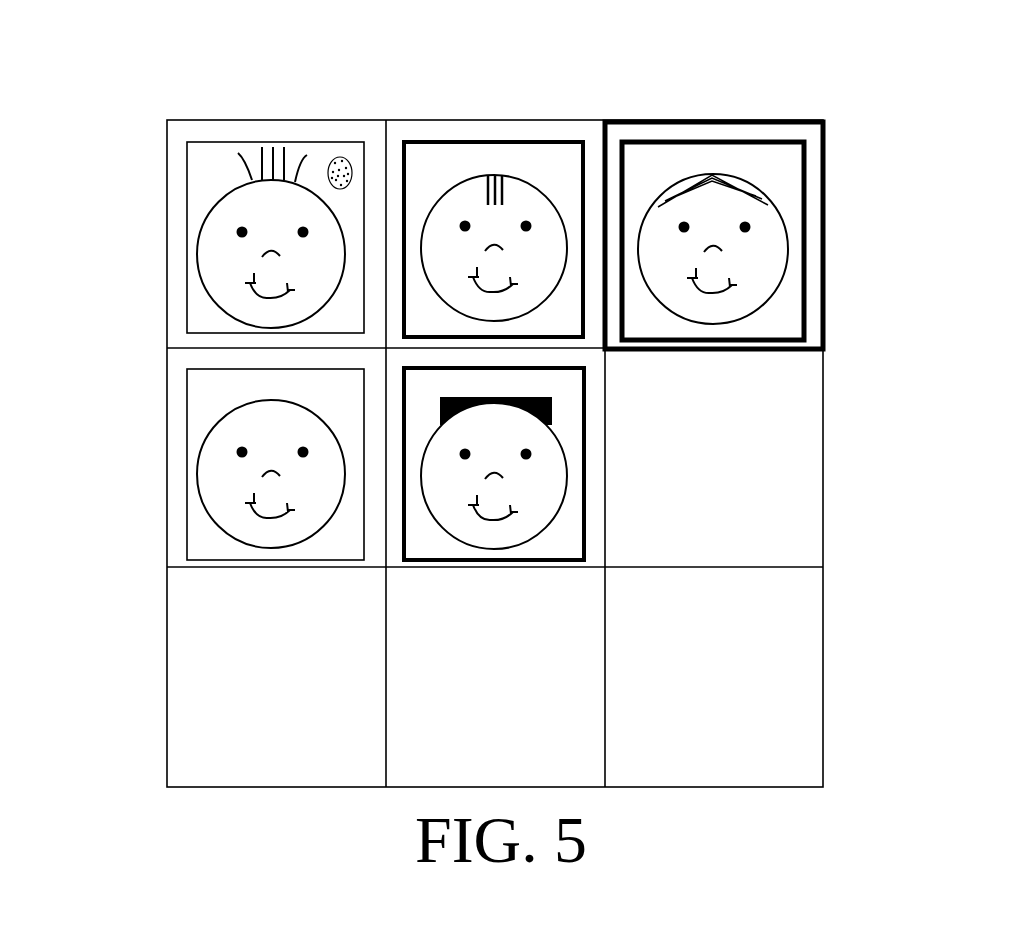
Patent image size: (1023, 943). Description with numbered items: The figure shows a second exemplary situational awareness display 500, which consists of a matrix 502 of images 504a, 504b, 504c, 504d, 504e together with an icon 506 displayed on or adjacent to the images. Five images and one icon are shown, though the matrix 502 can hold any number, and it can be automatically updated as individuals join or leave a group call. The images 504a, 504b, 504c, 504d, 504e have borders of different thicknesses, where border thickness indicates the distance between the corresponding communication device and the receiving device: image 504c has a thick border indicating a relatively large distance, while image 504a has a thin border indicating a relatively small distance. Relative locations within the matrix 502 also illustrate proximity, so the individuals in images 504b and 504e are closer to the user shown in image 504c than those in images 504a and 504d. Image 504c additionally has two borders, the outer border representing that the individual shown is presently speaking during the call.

The situational awareness display 500 is at (720, 58).
The matrix 502 is at (890, 242).
The image 504a is at (176, 223).
The image 504b is at (467, 130).
The image 504c is at (823, 178).
The image 504d is at (176, 386).
The image 504e is at (600, 450).
The icon 506 is at (337, 148).